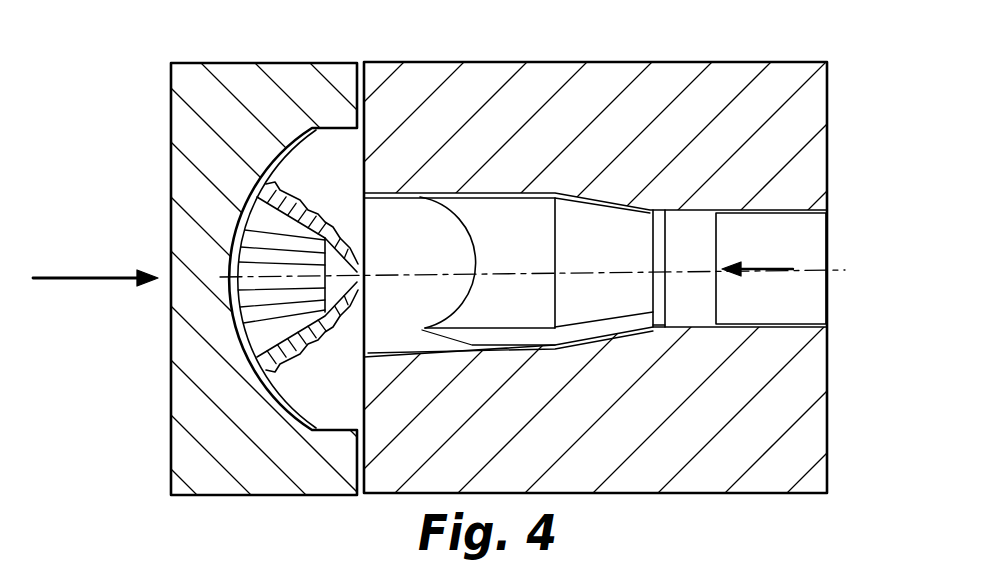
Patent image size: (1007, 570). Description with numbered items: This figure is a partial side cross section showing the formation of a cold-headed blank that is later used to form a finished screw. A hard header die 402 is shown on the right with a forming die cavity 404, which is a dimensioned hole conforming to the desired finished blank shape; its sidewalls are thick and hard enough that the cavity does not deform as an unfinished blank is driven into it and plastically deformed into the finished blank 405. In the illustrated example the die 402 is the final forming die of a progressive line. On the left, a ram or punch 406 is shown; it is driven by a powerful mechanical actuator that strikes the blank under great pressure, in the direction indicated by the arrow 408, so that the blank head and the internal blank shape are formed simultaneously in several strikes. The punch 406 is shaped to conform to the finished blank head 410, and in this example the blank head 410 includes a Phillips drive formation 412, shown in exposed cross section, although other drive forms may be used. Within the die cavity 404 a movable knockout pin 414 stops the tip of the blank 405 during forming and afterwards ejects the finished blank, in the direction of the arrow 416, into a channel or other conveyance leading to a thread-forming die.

The hard header die 402 is at (618, 58).
The forming die cavity 404 is at (700, 327).
The finished blank 405 is at (485, 236).
The punch 406 is at (232, 62).
The arrow indicating punch striking pressure 408 is at (64, 279).
The blank head 410 is at (344, 183).
The Phillips drive formation 412 is at (252, 306).
The movable knockout pin 414 is at (817, 280).
The arrow indicating ejection of the finished blank 416 is at (773, 268).